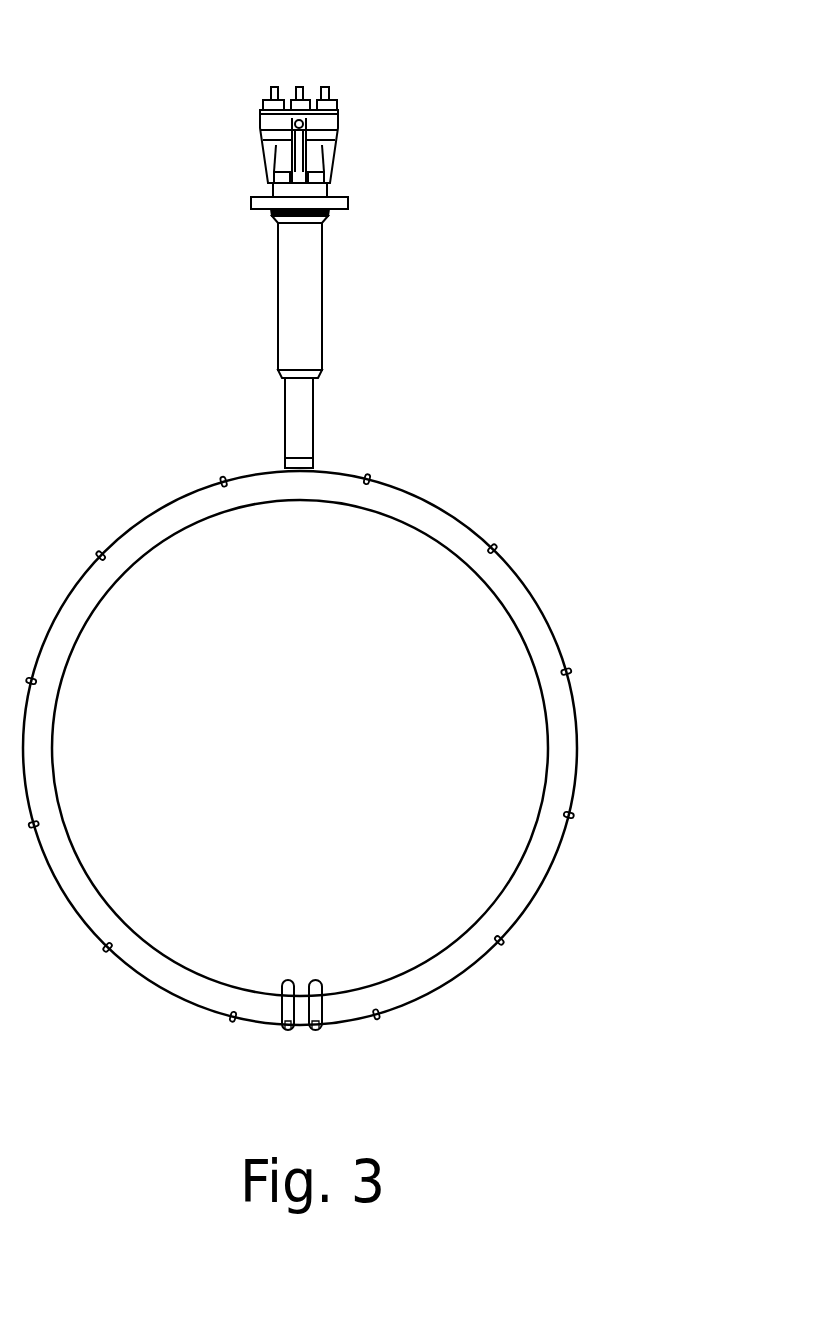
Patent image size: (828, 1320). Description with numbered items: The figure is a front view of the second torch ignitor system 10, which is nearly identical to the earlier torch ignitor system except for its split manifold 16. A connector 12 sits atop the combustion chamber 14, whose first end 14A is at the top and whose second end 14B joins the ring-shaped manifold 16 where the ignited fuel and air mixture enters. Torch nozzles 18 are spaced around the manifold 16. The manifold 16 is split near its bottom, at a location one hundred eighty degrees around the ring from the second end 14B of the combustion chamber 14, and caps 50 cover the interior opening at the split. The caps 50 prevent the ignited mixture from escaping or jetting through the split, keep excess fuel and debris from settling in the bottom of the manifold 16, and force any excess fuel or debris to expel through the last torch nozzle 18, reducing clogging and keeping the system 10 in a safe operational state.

The second torch ignitor system 10 is at (372, 560).
The connector 12 is at (250, 140).
The combustion chamber 14 is at (342, 308).
The upper stem portion with flange 14A is at (258, 228).
The second end of combustion chamber 14B is at (270, 442).
The split manifold 16 is at (550, 586).
The torch nozzles 18 is at (565, 816).
The caps 50 is at (288, 1031).